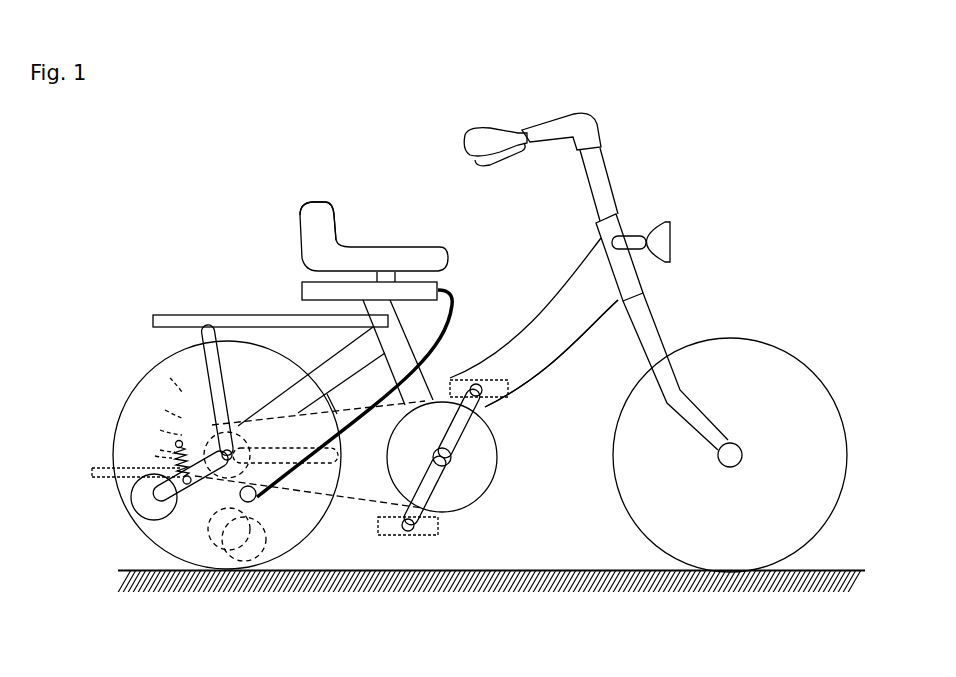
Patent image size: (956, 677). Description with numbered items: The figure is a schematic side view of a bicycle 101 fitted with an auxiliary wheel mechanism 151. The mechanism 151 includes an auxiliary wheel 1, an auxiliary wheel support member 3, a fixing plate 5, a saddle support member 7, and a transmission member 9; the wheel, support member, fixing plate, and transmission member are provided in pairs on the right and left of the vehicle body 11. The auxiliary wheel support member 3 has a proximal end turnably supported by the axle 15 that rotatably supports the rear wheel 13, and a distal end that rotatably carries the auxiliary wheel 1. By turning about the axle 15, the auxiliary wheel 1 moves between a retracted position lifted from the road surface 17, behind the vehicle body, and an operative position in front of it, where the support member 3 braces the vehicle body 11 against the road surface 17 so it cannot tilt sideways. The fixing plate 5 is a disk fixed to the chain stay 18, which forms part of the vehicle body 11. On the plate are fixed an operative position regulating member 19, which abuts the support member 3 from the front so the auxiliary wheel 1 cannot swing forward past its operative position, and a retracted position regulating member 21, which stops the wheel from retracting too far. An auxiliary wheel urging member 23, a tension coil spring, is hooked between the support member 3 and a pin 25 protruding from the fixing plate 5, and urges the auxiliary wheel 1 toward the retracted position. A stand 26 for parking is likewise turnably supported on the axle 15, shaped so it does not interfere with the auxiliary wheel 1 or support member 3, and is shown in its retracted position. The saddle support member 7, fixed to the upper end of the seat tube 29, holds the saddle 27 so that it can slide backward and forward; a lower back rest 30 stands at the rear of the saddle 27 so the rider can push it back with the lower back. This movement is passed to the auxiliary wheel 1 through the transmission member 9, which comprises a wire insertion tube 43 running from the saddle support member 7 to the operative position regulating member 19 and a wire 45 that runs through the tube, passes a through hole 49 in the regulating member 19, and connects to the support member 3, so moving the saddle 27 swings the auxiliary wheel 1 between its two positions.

The auxiliary wheel 1 is at (131, 500).
The auxiliary wheel support member 3 is at (118, 505).
The fixing plate 5 is at (165, 410).
The saddle support member 7 is at (313, 292).
The transmission member 9 is at (443, 328).
The vehicle body 11 is at (558, 305).
The rear wheel 13 is at (170, 378).
The axle 15 is at (202, 425).
The road surface 17 is at (490, 570).
The chain stay 18 is at (273, 400).
The operative position regulating member 19 is at (285, 500).
The retracted position regulating member 21 is at (160, 430).
The auxiliary wheel urging member 23 is at (155, 456).
The pin 25 is at (160, 450).
The stand 26 is at (92, 473).
The saddle 27 is at (400, 245).
The seat tube 29 is at (418, 290).
The lower back rest 30 is at (312, 207).
The wire insertion tube 43 is at (340, 437).
The wire 45 is at (212, 545).
The through hole 49 is at (248, 561).
The bicycle 101 is at (540, 380).
The auxiliary wheel mechanism 151 is at (172, 456).